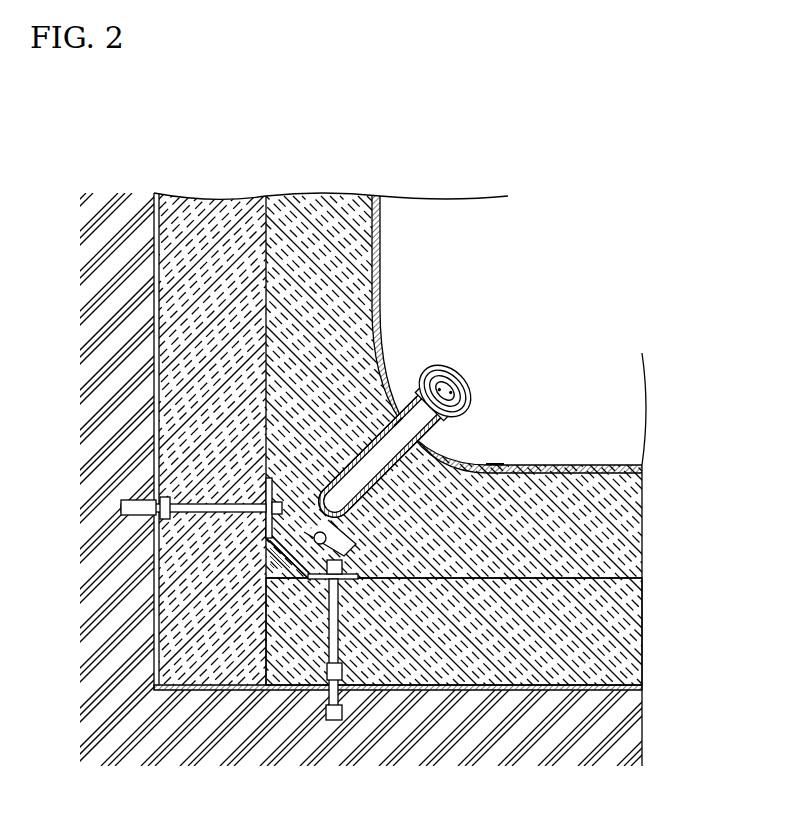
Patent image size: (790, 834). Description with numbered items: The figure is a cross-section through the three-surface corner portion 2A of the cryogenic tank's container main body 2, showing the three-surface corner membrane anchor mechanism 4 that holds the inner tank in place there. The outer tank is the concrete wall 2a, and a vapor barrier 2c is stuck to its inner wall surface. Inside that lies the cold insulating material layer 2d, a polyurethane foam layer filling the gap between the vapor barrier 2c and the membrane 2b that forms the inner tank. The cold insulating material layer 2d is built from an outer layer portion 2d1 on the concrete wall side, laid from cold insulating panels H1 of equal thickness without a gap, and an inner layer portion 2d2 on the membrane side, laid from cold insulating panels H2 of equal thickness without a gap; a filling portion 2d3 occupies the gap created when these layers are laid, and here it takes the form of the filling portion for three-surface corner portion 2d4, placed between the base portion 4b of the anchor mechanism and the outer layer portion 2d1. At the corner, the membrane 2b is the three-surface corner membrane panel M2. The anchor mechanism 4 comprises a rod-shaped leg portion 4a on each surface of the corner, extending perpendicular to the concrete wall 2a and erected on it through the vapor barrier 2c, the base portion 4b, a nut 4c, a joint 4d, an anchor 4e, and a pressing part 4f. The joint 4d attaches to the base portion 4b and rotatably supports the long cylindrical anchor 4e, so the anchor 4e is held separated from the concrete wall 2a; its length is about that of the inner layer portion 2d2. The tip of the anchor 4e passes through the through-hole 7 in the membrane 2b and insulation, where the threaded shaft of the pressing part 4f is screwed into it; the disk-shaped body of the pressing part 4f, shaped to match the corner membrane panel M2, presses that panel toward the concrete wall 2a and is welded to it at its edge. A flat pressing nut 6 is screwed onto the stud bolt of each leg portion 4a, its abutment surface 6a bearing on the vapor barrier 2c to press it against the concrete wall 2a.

The container main body 2 is at (395, 433).
The concrete wall 2a is at (98, 286).
The membrane 2b is at (375, 236).
The vapor barrier 2c is at (155, 556).
The cold insulating material layer 2d is at (395, 433).
The outer layer portion 2d1 is at (197, 212).
The inner layer portion 2d2 is at (338, 205).
The filling portion 2d3 is at (288, 556).
The filling portion for three-surface corner portion 2d4 is at (299, 662).
The three-surface corner portion 2A is at (571, 270).
The three-surface corner membrane anchor mechanism 4 is at (294, 523).
The leg portion 4a is at (213, 490).
The base portion 4b is at (308, 482).
The nut 4c is at (267, 488).
The joint 4d is at (352, 528).
The anchor 4e is at (374, 400).
The pressing part 4f is at (468, 388).
The pressing nut 6 is at (165, 489).
The abutment surface 6a is at (130, 504).
The through-hole 7 is at (488, 457).
The cold insulating panel H1 is at (612, 628).
The cold insulating panel H2 is at (626, 512).
The three-surface corner membrane panel M2 is at (507, 334).